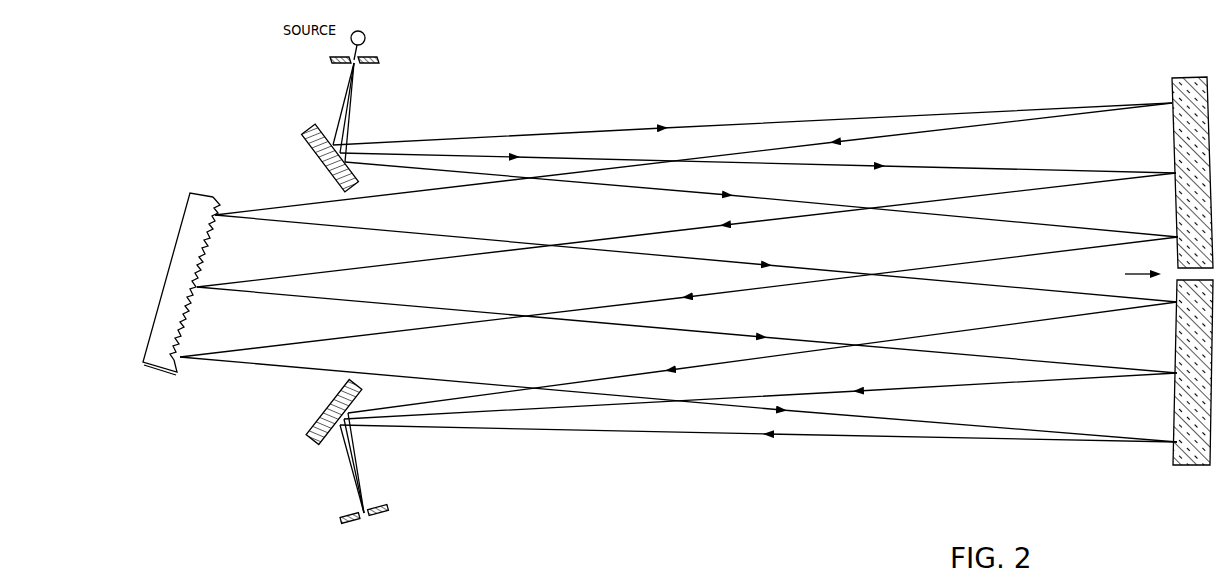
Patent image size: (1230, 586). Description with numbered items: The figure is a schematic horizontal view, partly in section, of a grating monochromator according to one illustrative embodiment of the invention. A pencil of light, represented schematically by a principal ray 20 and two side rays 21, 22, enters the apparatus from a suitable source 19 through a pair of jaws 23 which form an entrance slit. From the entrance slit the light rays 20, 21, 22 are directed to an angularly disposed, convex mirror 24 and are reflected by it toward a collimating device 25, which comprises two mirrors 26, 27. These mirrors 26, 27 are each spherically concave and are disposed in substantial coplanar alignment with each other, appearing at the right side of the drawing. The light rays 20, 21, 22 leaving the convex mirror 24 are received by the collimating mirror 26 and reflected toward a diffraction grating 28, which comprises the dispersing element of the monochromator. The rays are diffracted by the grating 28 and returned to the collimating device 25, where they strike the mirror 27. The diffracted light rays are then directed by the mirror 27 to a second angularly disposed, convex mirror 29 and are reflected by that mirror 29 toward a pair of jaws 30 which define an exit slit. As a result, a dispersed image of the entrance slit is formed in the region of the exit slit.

The source 19 is at (366, 39).
The principal ray 20 is at (342, 128).
The side ray 21 is at (350, 110).
The side ray 22 is at (337, 123).
The pair of jaws 23 is at (380, 62).
The convex mirror 24 is at (314, 156).
The collimating device 25 is at (1124, 274).
The collimating mirror 26 is at (1187, 77).
The mirror 27 is at (1195, 466).
The diffraction grating 28 is at (156, 370).
The convex mirror 29 is at (320, 415).
The pair of jaws 30 is at (392, 506).